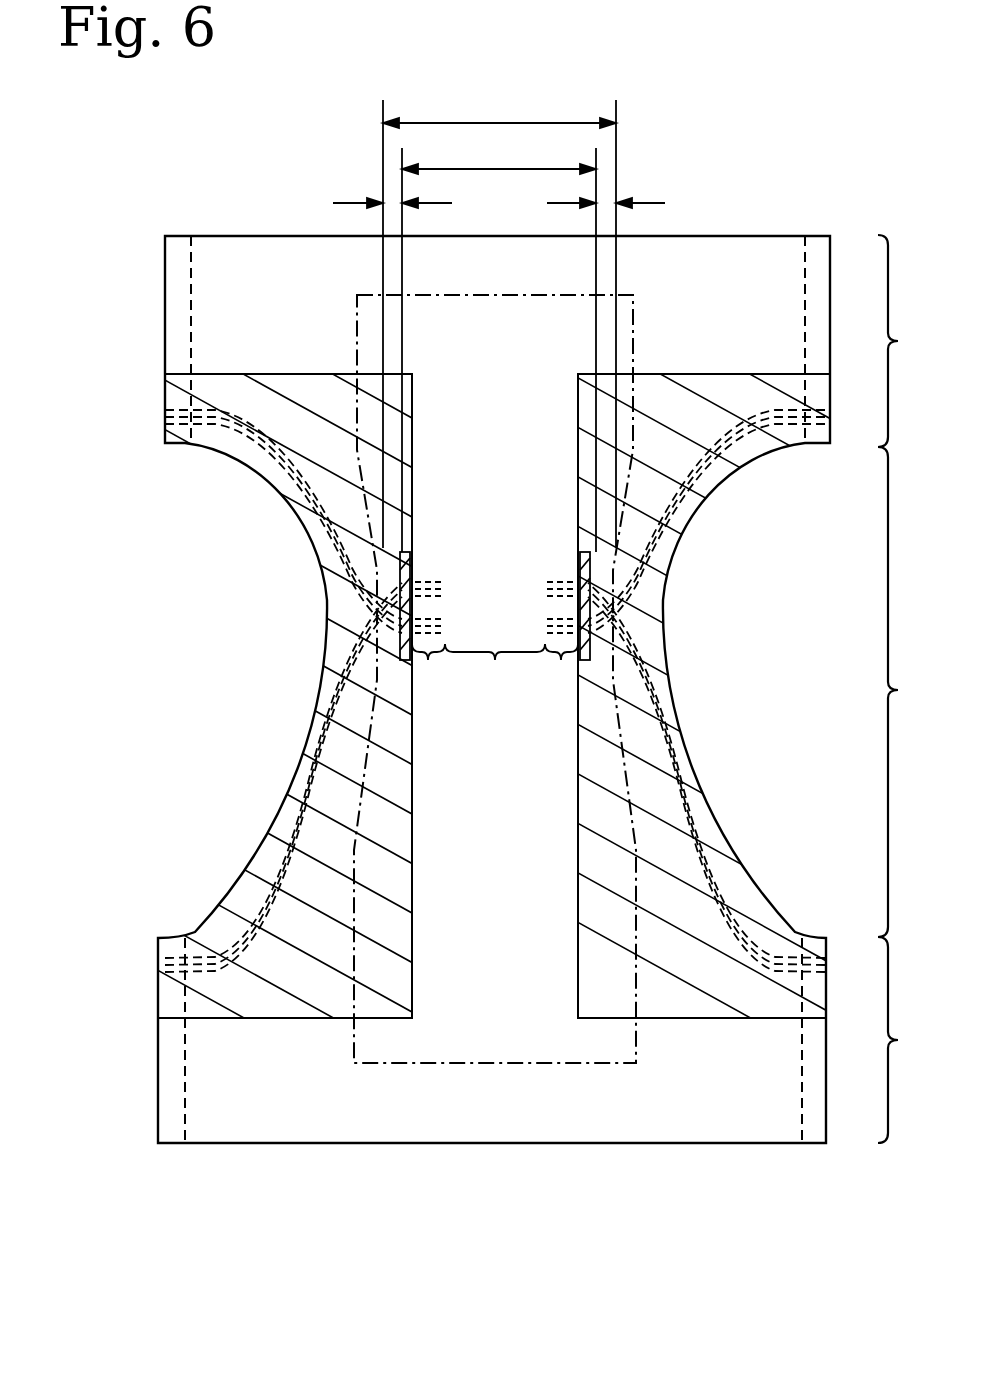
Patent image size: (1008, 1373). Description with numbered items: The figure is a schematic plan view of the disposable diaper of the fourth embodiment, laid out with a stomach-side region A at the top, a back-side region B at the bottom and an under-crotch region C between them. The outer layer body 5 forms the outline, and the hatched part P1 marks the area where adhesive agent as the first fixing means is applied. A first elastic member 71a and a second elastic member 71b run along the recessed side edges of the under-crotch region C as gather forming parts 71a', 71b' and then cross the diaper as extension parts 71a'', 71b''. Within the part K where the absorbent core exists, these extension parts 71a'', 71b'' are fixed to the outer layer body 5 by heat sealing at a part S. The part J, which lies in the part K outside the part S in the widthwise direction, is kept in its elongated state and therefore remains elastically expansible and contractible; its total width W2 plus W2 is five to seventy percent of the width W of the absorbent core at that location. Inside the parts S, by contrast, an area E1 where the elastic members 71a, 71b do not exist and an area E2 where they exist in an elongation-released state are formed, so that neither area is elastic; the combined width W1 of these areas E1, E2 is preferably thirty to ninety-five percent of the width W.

The outer layer body 5 is at (791, 236).
The hatched part P1 is at (276, 374).
The part where absorbent core exists K is at (495, 1066).
The heat sealing part S is at (413, 568).
The first elastic member 71a is at (497, 521).
The gather forming part of first elastic member 71a' is at (486, 558).
The extension part of first elastic member 71a'' is at (495, 596).
The second elastic member 71b is at (494, 777).
The gather forming part of second elastic member 71b' is at (488, 739).
The extension part of second elastic member 71b'' is at (495, 540).
The elastic part J is at (385, 656).
The width of absorbent core W is at (499, 316).
The width of non-elastic area W1 is at (499, 341).
The width of elastic portion W2 is at (397, 200).
The area where elastic members do not exist E1 is at (495, 674).
The area where elastic members exist in elongation released state E2 is at (495, 674).
The stomach-side region A is at (901, 341).
The back-side region B is at (899, 1040).
The under-crotch region C is at (899, 692).